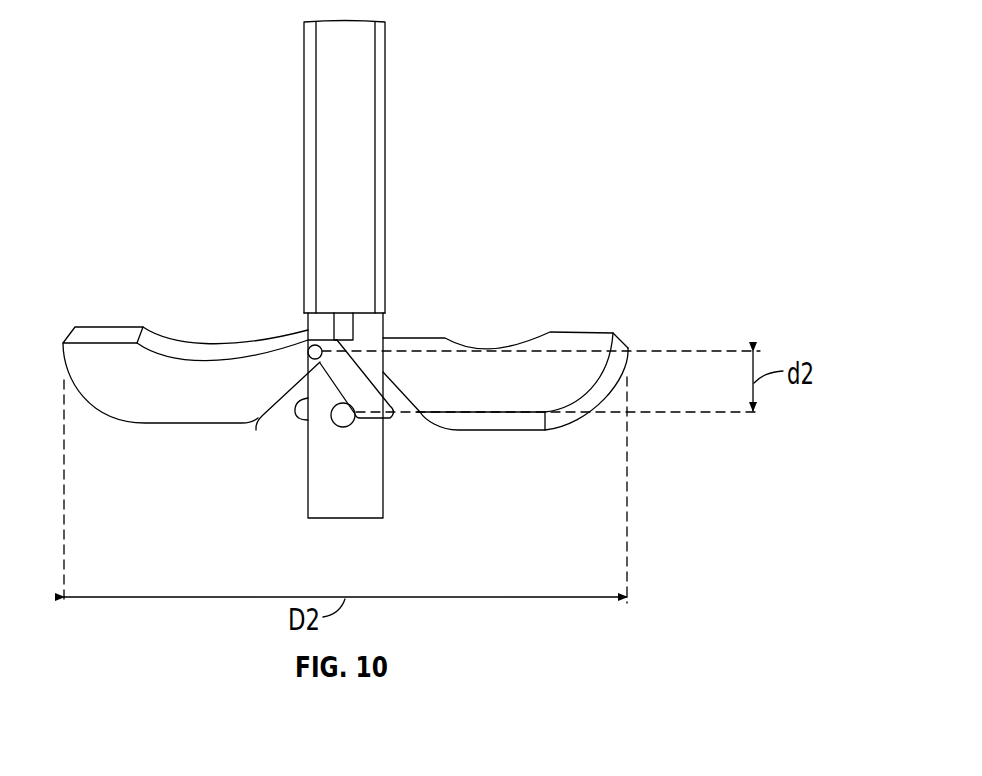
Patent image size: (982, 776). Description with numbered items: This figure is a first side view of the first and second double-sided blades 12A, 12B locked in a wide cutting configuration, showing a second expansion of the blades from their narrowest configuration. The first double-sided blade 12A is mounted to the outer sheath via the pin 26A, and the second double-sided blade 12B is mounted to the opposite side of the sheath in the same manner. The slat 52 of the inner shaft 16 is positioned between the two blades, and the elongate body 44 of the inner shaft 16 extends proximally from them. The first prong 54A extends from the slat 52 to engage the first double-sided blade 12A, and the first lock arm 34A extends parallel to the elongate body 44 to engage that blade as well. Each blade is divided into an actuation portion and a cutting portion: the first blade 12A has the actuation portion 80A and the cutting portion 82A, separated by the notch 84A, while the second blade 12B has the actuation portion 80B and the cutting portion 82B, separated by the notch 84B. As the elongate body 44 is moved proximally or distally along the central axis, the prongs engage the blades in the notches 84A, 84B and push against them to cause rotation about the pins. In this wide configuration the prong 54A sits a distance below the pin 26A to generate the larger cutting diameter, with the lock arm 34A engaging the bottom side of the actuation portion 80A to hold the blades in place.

The inner shaft 16 is at (285, 80).
The elongate body 44 is at (322, 128).
The slat 52 is at (370, 495).
The first lock arm 34A is at (342, 325).
The pin 26A is at (311, 346).
The first prong 54A is at (343, 427).
The actuation portion 80A is at (370, 373).
The actuation portion 80B is at (297, 415).
The notch 84A is at (273, 410).
The notch 84B is at (413, 396).
The first double-sided blade 12A is at (200, 427).
The second double-sided blade 12B is at (505, 439).
The cutting portion 82A is at (155, 408).
The cutting portion 82B is at (460, 431).